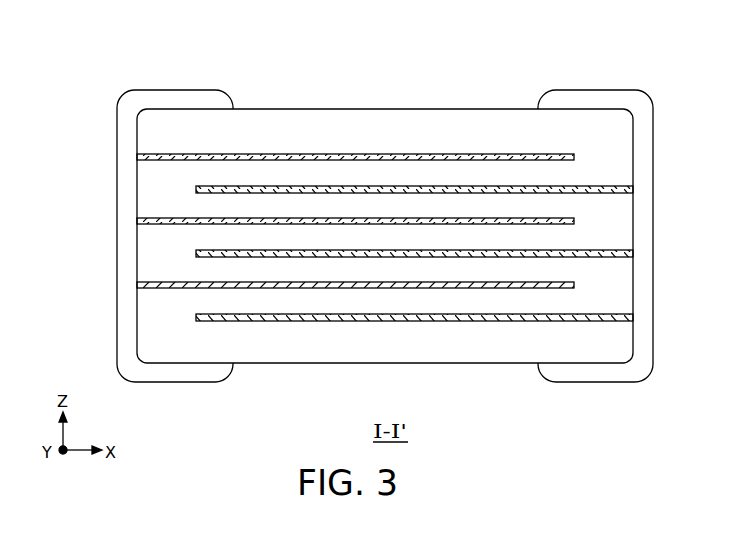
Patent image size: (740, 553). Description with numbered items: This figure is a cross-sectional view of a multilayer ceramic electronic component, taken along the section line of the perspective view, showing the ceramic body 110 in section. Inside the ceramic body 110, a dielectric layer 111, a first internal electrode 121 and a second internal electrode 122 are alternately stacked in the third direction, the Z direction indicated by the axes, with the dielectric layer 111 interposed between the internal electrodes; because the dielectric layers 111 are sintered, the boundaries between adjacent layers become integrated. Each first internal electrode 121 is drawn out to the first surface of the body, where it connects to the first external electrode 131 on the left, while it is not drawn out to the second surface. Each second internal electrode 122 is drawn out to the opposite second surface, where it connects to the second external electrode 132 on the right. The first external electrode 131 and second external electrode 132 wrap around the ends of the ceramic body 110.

The ceramic body 110 is at (352, 205).
The dielectric layer 111 is at (153, 195).
The first internal electrode 121 is at (167, 157).
The second internal electrode 122 is at (203, 193).
The first external electrode 131 is at (178, 98).
The second external electrode 132 is at (593, 98).